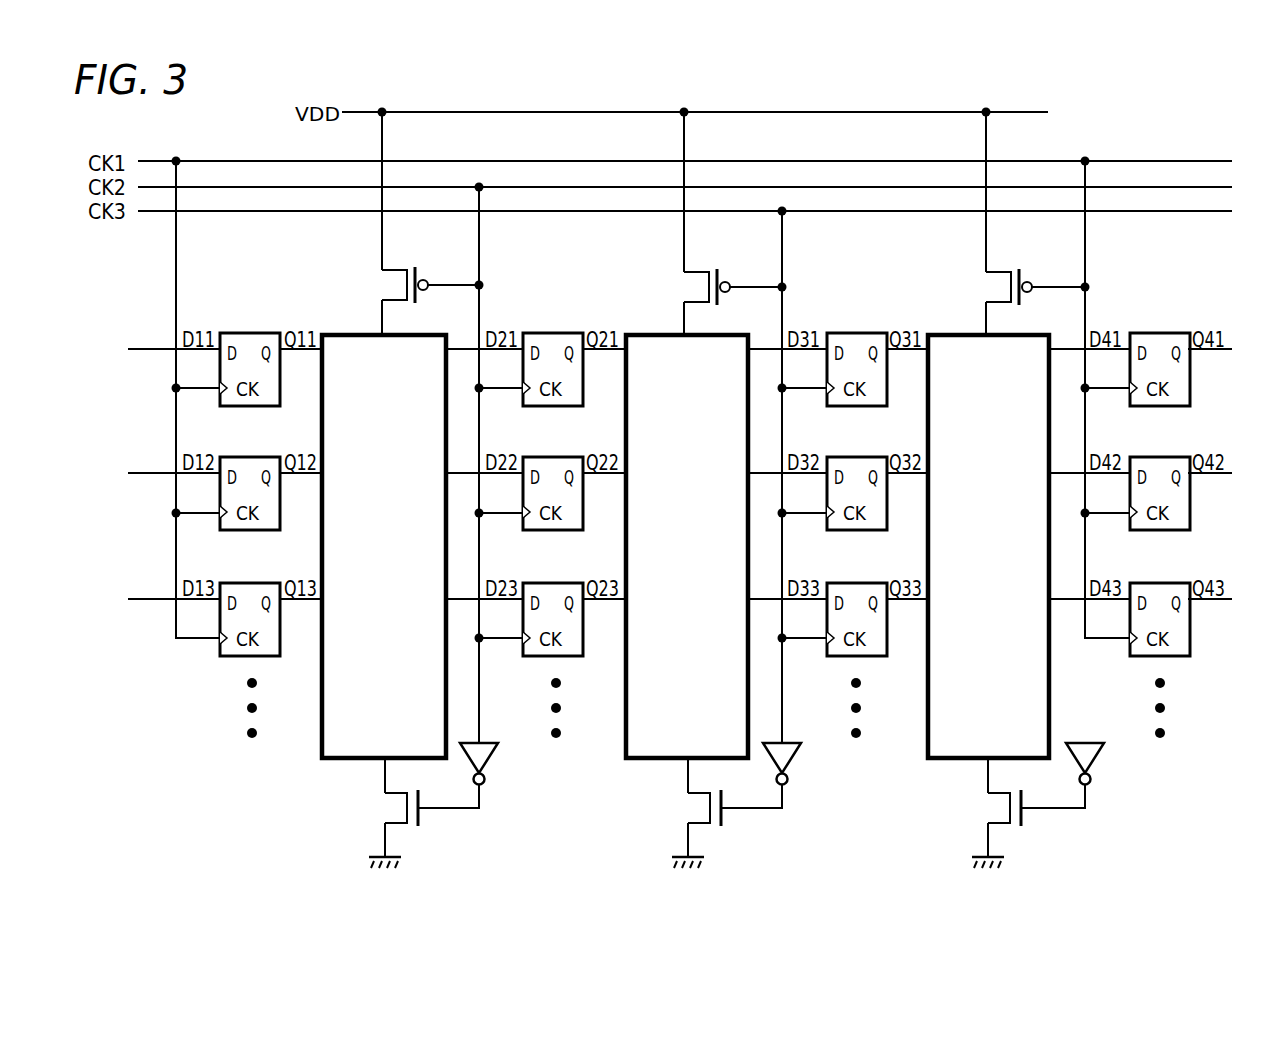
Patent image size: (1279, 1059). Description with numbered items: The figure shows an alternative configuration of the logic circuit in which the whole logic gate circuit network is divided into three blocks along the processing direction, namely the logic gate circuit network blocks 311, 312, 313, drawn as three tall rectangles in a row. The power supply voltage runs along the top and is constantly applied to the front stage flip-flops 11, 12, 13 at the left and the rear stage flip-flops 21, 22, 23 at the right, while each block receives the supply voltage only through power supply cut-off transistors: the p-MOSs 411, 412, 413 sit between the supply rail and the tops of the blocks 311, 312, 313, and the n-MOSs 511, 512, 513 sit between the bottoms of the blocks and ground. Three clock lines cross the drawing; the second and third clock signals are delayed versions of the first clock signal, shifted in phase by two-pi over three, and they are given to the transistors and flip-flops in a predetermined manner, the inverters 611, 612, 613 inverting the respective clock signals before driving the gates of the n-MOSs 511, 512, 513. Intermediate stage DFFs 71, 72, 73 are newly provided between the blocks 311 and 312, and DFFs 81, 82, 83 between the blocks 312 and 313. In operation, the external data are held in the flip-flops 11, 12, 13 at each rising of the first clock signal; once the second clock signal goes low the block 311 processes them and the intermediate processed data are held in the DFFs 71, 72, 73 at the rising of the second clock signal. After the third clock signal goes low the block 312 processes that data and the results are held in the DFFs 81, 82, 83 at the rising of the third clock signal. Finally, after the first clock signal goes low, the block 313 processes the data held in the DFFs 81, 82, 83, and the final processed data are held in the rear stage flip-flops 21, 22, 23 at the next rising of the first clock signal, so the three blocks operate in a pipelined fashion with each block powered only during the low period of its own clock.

The front stage flip-flop 11 is at (235, 333).
The front stage flip-flop 12 is at (235, 457).
The front stage flip-flop 13 is at (235, 583).
The intermediate stage DFF 71 is at (538, 333).
The intermediate stage DFF 72 is at (538, 457).
The intermediate stage DFF 73 is at (538, 583).
The intermediate stage DFF 81 is at (842, 333).
The intermediate stage DFF 82 is at (842, 457).
The intermediate stage DFF 83 is at (842, 583).
The rear stage flip-flop 21 is at (1145, 333).
The rear stage flip-flop 22 is at (1145, 457).
The rear stage flip-flop 23 is at (1145, 583).
The logic gate circuit network block 311 is at (362, 759).
The logic gate circuit network block 312 is at (665, 759).
The logic gate circuit network block 313 is at (966, 759).
The p-MOS 411 is at (415, 268).
The p-MOS 412 is at (717, 270).
The p-MOS 413 is at (1019, 270).
The n-MOS 511 is at (424, 812).
The n-MOS 512 is at (727, 812).
The n-MOS 513 is at (1027, 812).
The inverter 611 is at (493, 758).
The inverter 612 is at (796, 758).
The inverter 613 is at (1099, 758).